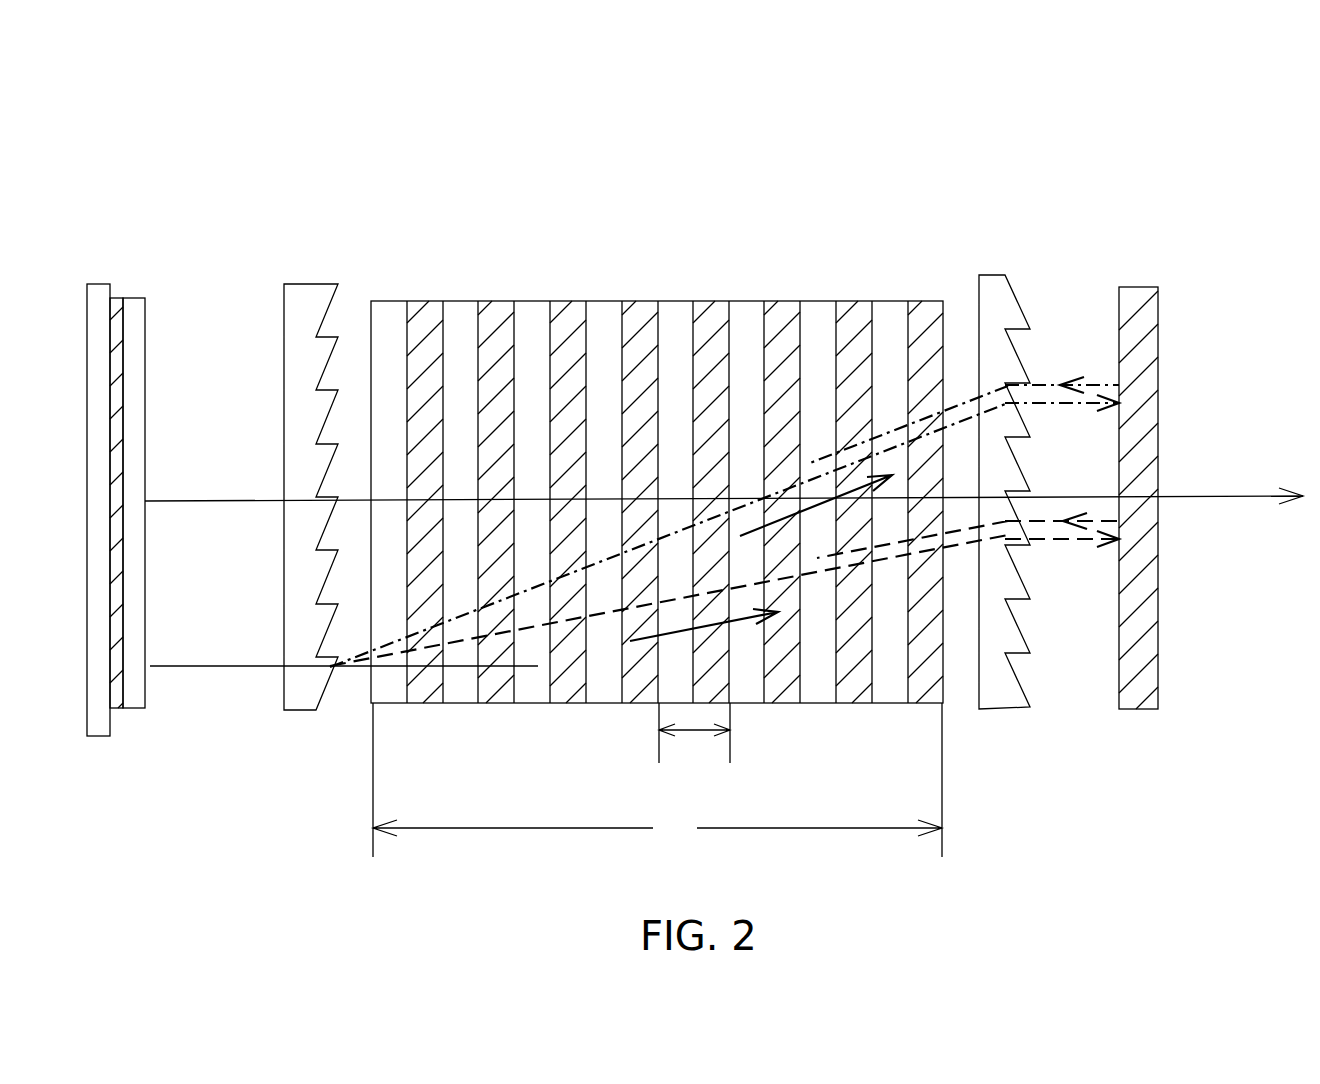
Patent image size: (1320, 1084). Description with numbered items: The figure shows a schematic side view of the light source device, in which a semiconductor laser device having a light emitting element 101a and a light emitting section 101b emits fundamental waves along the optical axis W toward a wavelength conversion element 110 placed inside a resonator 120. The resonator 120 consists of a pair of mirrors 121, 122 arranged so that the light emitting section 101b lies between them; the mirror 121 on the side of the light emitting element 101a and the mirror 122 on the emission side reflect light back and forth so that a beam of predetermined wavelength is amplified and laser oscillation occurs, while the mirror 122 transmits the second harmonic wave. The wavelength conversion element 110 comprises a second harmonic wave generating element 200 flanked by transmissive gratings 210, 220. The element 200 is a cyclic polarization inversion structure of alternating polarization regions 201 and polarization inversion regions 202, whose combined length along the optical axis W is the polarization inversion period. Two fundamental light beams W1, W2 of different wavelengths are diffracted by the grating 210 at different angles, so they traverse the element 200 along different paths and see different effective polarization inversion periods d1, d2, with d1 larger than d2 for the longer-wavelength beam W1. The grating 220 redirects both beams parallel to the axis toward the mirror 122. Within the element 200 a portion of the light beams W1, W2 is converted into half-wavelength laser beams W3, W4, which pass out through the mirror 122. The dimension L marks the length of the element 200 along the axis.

The light emitting element 101a is at (100, 284).
The light emitting section 101b is at (147, 304).
The wavelength conversion element 110 is at (1020, 180).
The resonator 120 is at (178, 227).
The mirror 121 is at (118, 298).
The mirror 122 is at (1135, 287).
The second harmonic wave generating element 200 is at (940, 238).
The polarization region 201 is at (458, 301).
The polarization inversion region 202 is at (705, 301).
The transmissive grating 210 is at (307, 284).
The transmissive grating 220 is at (992, 275).
The optical axis W is at (1232, 493).
The light beam W1 is at (605, 560).
The light beam W2 is at (607, 614).
The laser beam W3 is at (895, 497).
The laser beam W4 is at (745, 613).
The effective polarization inversion period d1 is at (735, 509).
The effective polarization inversion period d2 is at (735, 588).
The length of inverted structure L is at (657, 780).